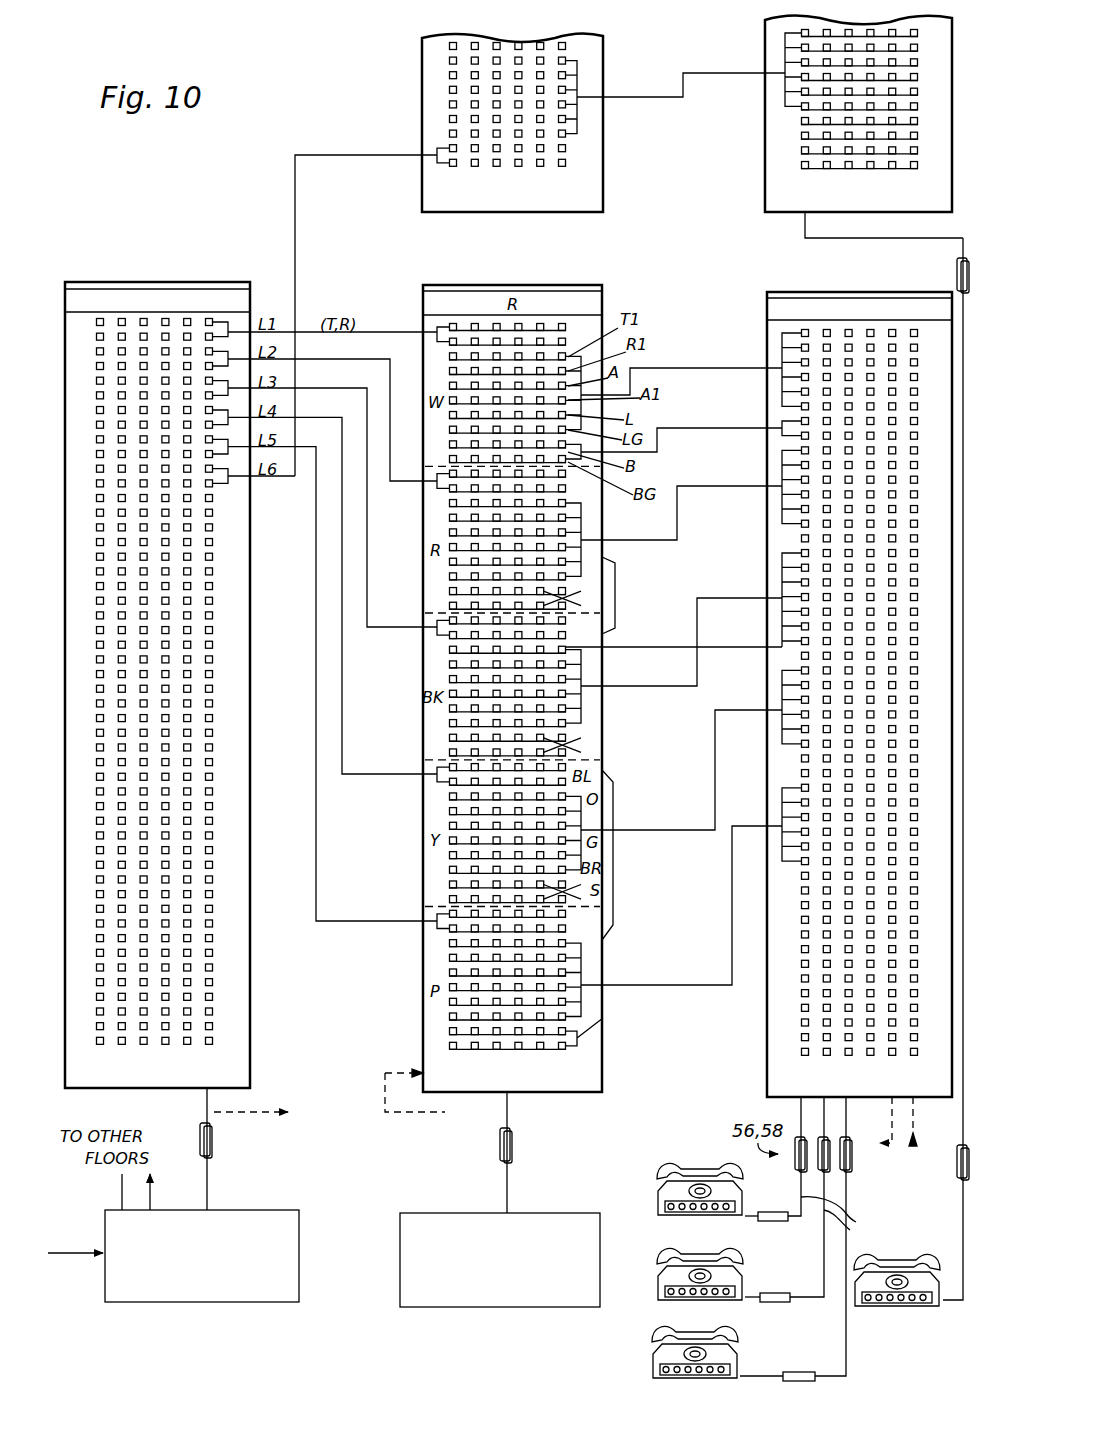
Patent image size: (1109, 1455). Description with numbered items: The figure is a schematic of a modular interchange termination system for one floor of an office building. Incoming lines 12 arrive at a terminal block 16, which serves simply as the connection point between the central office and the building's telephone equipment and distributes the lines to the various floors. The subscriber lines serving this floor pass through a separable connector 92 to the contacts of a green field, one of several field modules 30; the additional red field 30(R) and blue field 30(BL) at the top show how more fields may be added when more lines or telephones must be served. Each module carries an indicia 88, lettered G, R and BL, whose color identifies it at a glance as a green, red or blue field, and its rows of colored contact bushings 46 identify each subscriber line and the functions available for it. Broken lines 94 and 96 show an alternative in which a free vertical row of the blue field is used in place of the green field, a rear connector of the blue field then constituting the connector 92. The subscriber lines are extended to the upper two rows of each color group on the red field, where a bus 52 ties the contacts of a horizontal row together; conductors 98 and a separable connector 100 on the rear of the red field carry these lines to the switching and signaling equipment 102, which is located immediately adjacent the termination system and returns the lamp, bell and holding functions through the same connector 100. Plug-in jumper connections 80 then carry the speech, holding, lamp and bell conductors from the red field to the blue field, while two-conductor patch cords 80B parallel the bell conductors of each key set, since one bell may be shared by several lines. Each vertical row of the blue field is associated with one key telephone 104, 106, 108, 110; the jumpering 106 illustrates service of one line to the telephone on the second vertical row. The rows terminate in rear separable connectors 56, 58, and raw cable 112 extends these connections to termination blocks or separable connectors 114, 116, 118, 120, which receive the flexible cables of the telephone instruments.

The incoming trunk 12 is at (66, 1252).
The terminal block 16 is at (255, 1302).
The field module 30 is at (98, 280).
The contact bushing 46 is at (214, 1042).
The bus 52 is at (264, 1149).
The separable connector 56 is at (537, 1161).
The separable connector 58 is at (264, 1149).
The plug-in jumper connection 80 is at (716, 368).
The two conductor patch cord 80B is at (617, 628).
The indicia 88 is at (216, 296).
The separable connector 92 is at (213, 1150).
The broken line extension to blue field row 94 is at (281, 1112).
The broken line extension to red field 96 is at (384, 1073).
The conductors 98 is at (508, 1109).
The separable connector 100 is at (513, 1150).
The switching and signaling equipment 102 is at (458, 1210).
The key telephone 104 is at (683, 1158).
The key telephone 106 is at (652, 1284).
The key telephone 108 is at (648, 1369).
The key telephone 110 is at (870, 1312).
The telephone cable 112 is at (960, 1220).
The termination block or separable connector 114 is at (762, 1223).
The termination block or separable connector 116 is at (772, 1305).
The termination block or separable connector 118 is at (799, 1371).
The termination block or separable connector 120 is at (960, 1182).